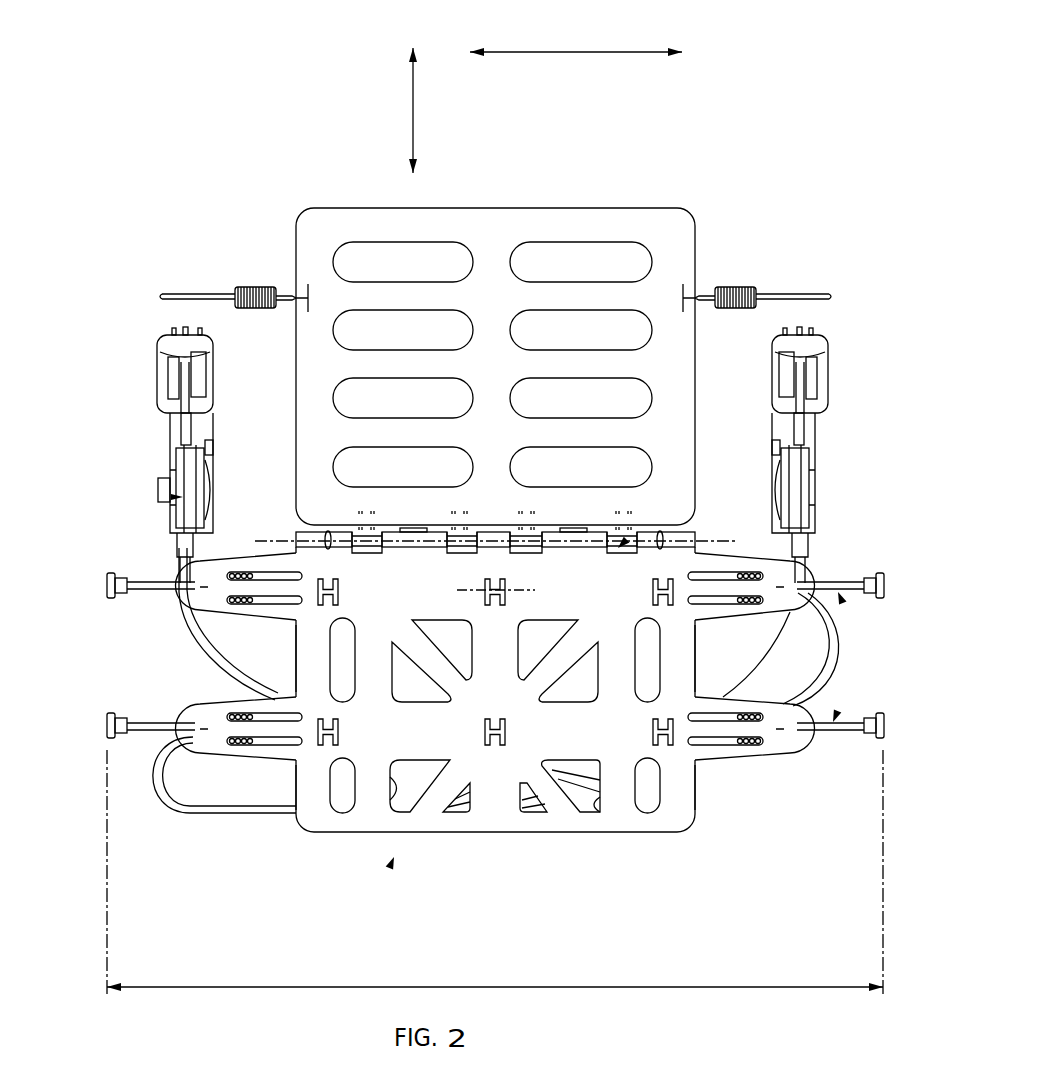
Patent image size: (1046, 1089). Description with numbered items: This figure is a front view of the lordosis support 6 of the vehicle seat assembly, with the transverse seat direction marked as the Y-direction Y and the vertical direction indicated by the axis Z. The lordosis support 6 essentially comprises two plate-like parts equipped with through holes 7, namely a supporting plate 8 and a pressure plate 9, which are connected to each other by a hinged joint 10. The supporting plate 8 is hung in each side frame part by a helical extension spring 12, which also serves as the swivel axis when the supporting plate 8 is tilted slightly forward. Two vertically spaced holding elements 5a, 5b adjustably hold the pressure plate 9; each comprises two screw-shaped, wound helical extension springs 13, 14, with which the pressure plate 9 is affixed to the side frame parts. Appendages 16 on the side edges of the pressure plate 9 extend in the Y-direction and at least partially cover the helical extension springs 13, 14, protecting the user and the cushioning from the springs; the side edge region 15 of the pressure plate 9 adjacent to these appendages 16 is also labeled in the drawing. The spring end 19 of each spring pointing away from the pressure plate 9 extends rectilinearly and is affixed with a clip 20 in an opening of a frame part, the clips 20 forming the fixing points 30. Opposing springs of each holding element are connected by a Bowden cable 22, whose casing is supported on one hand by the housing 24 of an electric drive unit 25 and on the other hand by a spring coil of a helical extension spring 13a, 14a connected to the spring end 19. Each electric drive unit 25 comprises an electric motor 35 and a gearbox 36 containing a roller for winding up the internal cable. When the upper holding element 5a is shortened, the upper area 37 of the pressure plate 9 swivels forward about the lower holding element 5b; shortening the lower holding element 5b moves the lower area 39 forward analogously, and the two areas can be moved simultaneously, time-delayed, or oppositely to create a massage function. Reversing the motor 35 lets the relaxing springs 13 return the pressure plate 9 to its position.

The upper holding element 5a is at (842, 601).
The lower holding element 5b is at (837, 711).
The lordosis support 6 is at (390, 866).
The through holes 7 is at (572, 255).
The supporting plate 8 is at (490, 228).
The pressure plate 9 is at (693, 790).
The hinged joint 10 is at (622, 543).
The helical extension spring 12 is at (252, 288).
The helical extension spring 13 is at (244, 575).
The helical extension spring 13a is at (752, 565).
The helical extension spring 14 is at (243, 745).
The helical extension spring 14a is at (747, 747).
The plate side edge 15 is at (697, 662).
The appendages 16 is at (283, 607).
The spring end 19 is at (152, 725).
The clip 20 is at (459, 668).
The Bowden cable 22 is at (815, 678).
The housing 24 is at (178, 560).
The electric drive unit 25 is at (172, 497).
The fixing points 30 is at (107, 742).
The electric motor 35 is at (175, 378).
The gearbox 36 is at (205, 476).
The upper area 37 is at (407, 592).
The lower area 39 is at (527, 723).
The Y-direction Y is at (600, 52).
The Z axis Z is at (413, 118).